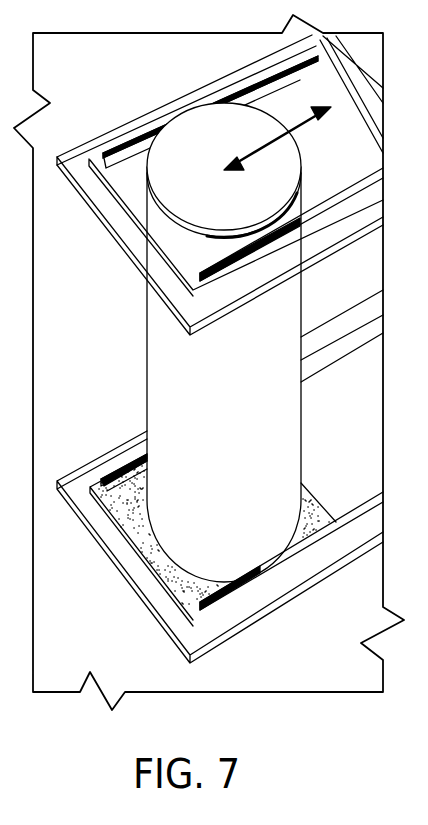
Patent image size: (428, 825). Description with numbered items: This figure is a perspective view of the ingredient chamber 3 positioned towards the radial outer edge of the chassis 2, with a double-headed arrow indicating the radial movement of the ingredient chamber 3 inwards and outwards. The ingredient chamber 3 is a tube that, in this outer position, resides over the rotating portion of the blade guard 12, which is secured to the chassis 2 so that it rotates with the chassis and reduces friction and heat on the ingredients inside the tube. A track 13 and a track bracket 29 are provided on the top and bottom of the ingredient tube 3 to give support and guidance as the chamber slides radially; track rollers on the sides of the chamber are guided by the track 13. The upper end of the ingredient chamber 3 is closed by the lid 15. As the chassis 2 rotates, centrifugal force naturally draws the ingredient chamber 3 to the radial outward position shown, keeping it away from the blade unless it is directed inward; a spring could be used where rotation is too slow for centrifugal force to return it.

The chassis 2 is at (77, 163).
The ingredient chamber 3 is at (234, 462).
The rotating portion of the blade guard 12 is at (108, 500).
The track 13 is at (122, 148).
The lid 15 is at (259, 138).
The track bracket 29 is at (150, 142).